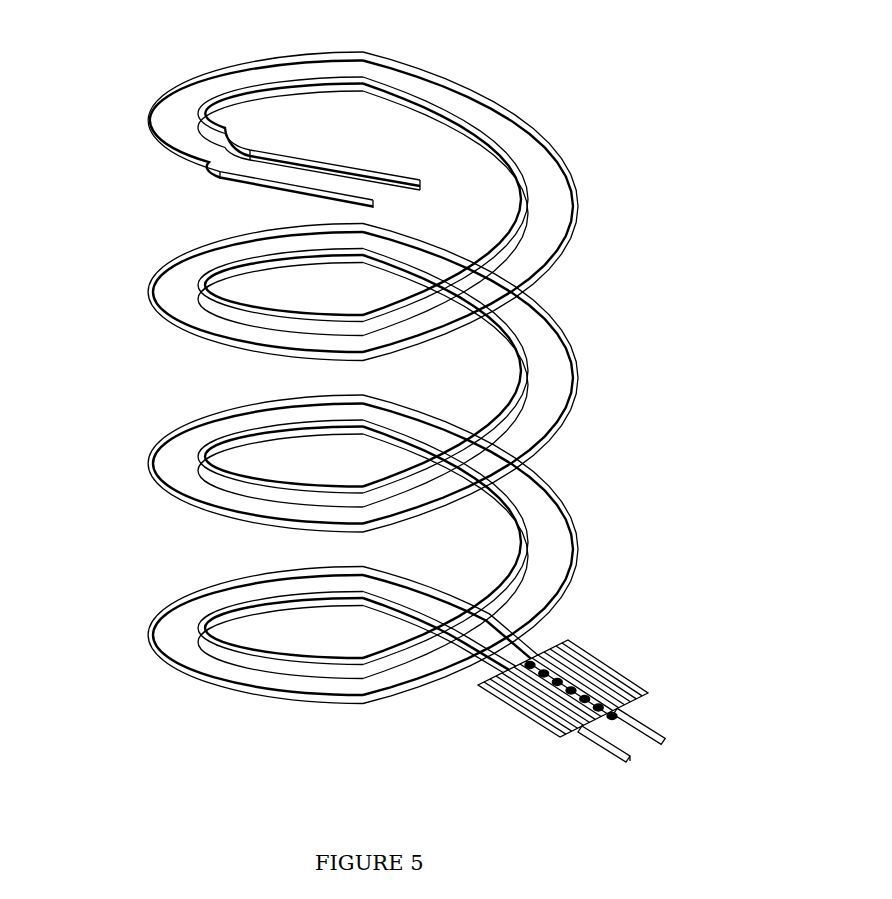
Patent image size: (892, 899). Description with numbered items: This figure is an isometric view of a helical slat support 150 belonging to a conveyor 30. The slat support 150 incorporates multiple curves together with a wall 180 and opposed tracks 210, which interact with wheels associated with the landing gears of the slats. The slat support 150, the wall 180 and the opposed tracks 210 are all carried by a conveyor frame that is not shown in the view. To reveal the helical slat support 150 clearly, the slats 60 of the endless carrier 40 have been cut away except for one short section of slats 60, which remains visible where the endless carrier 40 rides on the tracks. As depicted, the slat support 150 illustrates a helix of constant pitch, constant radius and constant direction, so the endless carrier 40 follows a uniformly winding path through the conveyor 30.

The conveyor 30 is at (390, 407).
The helical slat support 150 is at (365, 423).
The opposed tracks 210 is at (577, 206).
The wall 180 is at (527, 380).
The slats 60 is at (597, 645).
The endless carrier 40 is at (596, 672).